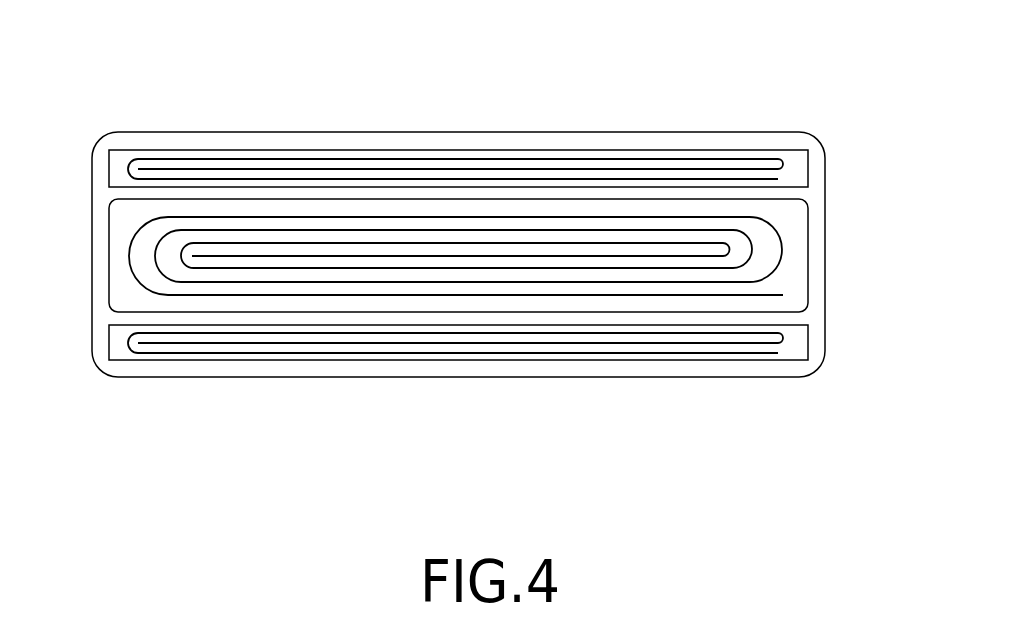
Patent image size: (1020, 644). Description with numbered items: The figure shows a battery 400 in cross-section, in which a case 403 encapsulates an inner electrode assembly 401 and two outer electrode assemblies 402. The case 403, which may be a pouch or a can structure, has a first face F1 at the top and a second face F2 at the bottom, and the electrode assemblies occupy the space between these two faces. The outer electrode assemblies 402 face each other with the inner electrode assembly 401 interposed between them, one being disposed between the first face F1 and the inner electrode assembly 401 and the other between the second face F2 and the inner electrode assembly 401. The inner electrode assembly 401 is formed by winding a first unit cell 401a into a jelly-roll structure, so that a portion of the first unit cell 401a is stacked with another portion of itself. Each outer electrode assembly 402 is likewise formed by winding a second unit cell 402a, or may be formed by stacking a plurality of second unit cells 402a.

The battery 400 is at (472, 237).
The inner electrode assembly 401 is at (472, 255).
The first unit cell 401a is at (782, 249).
The outer electrode assembly 402 is at (458, 256).
The second unit cell 402a is at (433, 168).
The case 403 is at (826, 178).
The first face F1 is at (218, 132).
The second face F2 is at (218, 378).